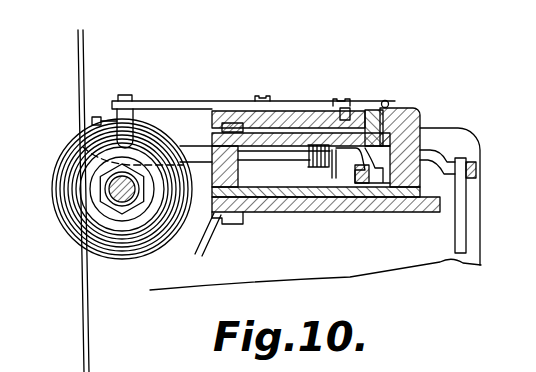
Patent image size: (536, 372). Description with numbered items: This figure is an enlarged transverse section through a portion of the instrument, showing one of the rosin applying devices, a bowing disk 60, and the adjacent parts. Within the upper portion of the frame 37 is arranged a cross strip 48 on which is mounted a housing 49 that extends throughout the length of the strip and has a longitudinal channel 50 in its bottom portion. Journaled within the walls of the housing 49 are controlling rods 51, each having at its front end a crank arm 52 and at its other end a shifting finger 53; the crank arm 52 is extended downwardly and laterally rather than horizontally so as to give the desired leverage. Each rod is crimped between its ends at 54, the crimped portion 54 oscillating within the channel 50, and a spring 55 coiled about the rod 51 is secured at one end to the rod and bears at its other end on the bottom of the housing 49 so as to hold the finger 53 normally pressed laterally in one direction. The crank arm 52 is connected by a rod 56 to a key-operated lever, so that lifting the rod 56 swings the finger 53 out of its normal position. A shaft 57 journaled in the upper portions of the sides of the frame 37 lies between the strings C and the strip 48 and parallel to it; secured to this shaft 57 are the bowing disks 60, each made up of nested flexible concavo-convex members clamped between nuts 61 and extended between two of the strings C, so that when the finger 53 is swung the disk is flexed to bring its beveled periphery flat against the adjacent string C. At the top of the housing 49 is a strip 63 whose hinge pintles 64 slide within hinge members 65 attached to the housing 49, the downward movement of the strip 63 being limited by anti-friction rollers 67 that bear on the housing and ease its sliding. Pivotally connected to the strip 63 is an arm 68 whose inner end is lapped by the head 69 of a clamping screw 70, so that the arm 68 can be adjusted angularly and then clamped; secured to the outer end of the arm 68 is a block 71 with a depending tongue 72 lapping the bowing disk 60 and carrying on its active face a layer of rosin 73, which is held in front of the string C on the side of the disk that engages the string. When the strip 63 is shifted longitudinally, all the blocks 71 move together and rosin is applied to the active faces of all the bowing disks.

The strings C is at (79, 50).
The frame 37 is at (429, 258).
The cross strip 48 is at (317, 212).
The housing 49 is at (240, 175).
The longitudinal channel 50 is at (364, 146).
The controlling rod 51 is at (424, 156).
The crank arm 52 is at (478, 147).
The shifting finger 53 is at (93, 118).
The crimped portion 54 is at (368, 135).
The spring 55 is at (318, 145).
The rod 56 is at (460, 213).
The shaft 57 is at (124, 206).
The bowing disk 60 is at (164, 242).
The nut 61 is at (103, 196).
The strip 63 is at (278, 112).
The pintle 64 is at (405, 108).
The hinge member 65 is at (387, 102).
The anti-friction roller 67 is at (235, 124).
The arm 68 is at (162, 101).
The head 69 is at (333, 100).
The clamping screw 70 is at (346, 102).
The block 71 is at (118, 118).
The depending tongue 72 is at (117, 134).
The layer of rosin 73 is at (535, 108).